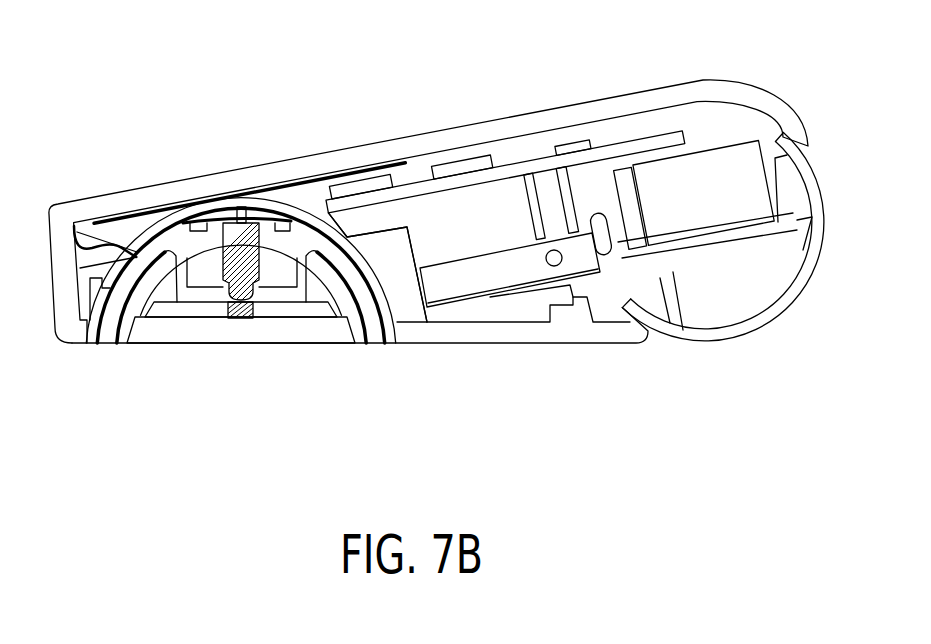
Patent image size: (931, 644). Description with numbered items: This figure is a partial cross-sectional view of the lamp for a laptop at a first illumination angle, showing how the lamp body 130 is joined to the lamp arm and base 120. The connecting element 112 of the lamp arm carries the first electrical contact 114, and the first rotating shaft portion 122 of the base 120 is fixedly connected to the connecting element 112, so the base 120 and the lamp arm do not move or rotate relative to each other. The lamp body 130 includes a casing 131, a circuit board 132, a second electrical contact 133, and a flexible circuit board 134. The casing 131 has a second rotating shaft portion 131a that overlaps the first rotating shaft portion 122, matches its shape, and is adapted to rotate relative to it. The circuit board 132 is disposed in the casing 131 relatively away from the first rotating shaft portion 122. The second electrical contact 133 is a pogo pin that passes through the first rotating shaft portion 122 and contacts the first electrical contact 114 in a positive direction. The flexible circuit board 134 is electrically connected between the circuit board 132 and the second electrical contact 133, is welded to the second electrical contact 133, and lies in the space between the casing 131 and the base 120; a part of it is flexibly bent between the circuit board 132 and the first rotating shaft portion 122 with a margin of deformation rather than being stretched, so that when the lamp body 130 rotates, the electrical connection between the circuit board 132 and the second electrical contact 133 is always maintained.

The lamp body 130 is at (357, 72).
The flexible circuit board 134 is at (80, 250).
The second electrical contact 133 is at (236, 268).
The second rotating shaft portion 131a is at (218, 212).
The casing 131 is at (290, 172).
The circuit board 132 is at (422, 188).
The connecting element 112 is at (355, 328).
The first electrical contact 114 is at (238, 305).
The first rotating shaft portion 122 is at (110, 330).
The base 120 is at (241, 330).